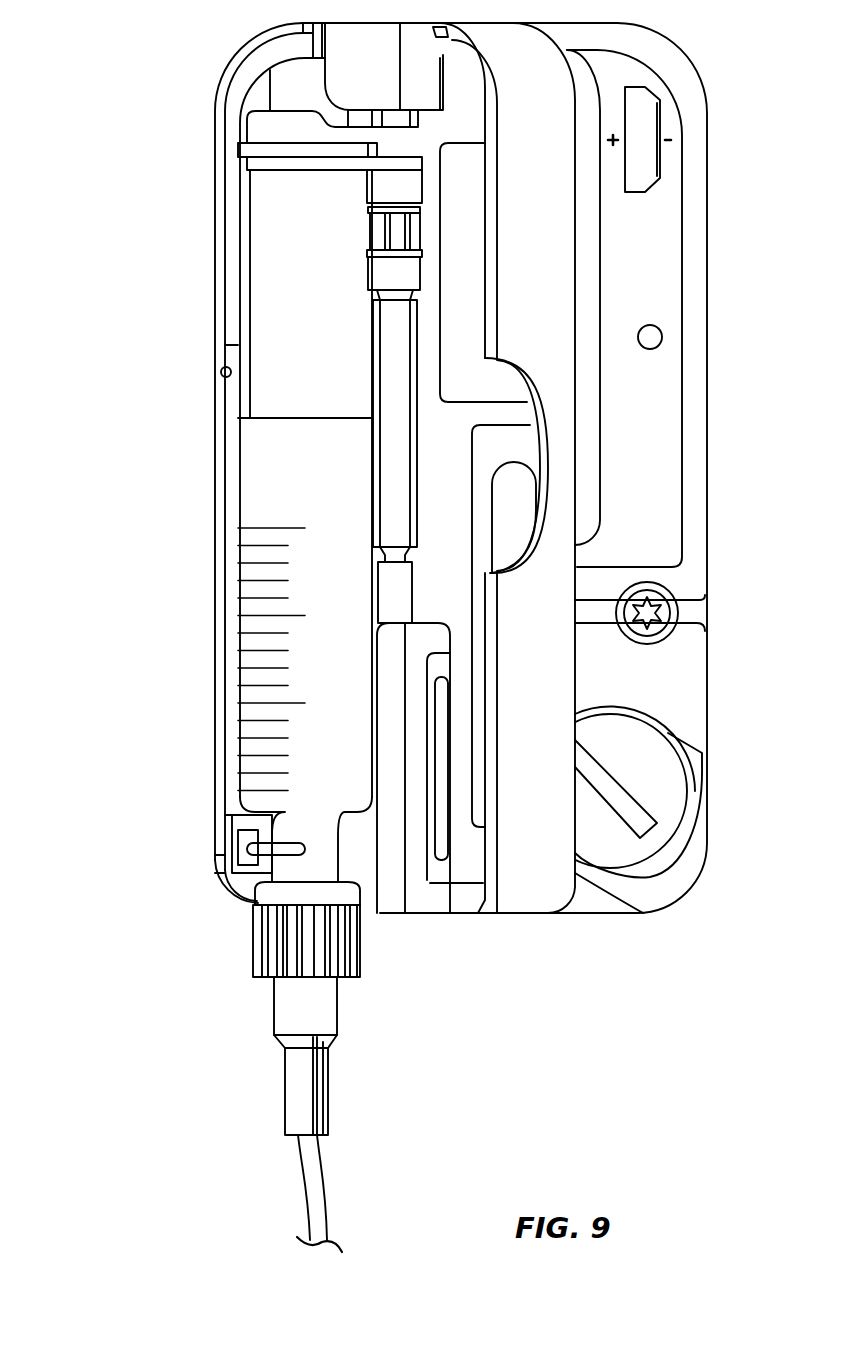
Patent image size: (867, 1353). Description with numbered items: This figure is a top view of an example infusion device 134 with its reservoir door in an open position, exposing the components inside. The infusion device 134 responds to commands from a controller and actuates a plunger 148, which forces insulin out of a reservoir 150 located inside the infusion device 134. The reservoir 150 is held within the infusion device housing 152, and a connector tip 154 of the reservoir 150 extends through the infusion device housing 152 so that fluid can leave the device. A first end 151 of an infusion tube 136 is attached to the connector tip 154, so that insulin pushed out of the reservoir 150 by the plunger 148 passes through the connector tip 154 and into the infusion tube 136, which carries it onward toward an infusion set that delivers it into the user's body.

The infusion device 134 is at (100, 238).
The infusion tube 136 is at (312, 1195).
The plunger 148 is at (265, 322).
The reservoir 150 is at (257, 455).
The first end 151 is at (293, 1100).
The infusion device housing 152 is at (707, 338).
The connector tip 154 is at (300, 890).